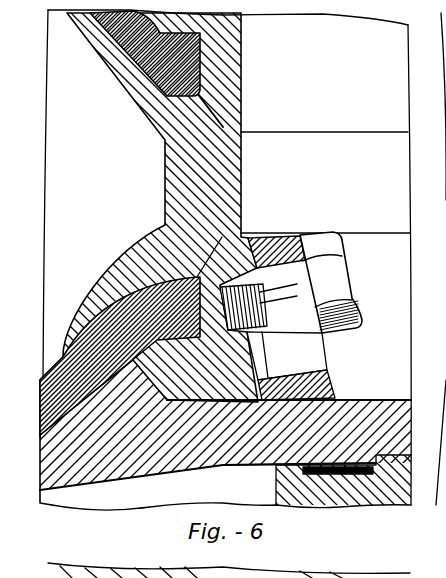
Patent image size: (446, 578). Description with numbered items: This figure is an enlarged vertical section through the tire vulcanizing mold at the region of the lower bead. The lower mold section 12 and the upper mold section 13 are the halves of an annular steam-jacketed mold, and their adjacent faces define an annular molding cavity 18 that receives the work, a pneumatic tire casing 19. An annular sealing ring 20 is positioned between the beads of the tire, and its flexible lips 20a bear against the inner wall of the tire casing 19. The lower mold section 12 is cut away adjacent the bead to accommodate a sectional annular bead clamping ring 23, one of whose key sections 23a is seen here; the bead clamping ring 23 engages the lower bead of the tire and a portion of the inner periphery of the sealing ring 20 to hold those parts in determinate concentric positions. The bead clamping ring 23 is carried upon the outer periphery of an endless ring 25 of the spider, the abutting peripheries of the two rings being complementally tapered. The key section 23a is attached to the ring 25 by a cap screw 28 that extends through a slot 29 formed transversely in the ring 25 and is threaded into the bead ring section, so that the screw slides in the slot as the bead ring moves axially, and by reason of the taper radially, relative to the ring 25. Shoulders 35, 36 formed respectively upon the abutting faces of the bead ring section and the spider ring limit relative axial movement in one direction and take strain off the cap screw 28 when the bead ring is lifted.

The lower mold section 12 is at (150, 442).
The upper mold section 13 is at (232, 58).
The annular molding cavity 18 is at (51, 432).
The pneumatic tire casing 19 is at (77, 405).
The annular sealing ring 20 is at (231, 163).
The flexible lips 20a is at (70, 327).
The sectional annular bead clamping ring 23 is at (187, 400).
The key sections 23a is at (213, 400).
The endless ring 25 is at (276, 243).
The cap screws 28 is at (333, 240).
The slots 29 is at (324, 360).
The shoulder 35 is at (262, 335).
The shoulder 36 is at (268, 370).